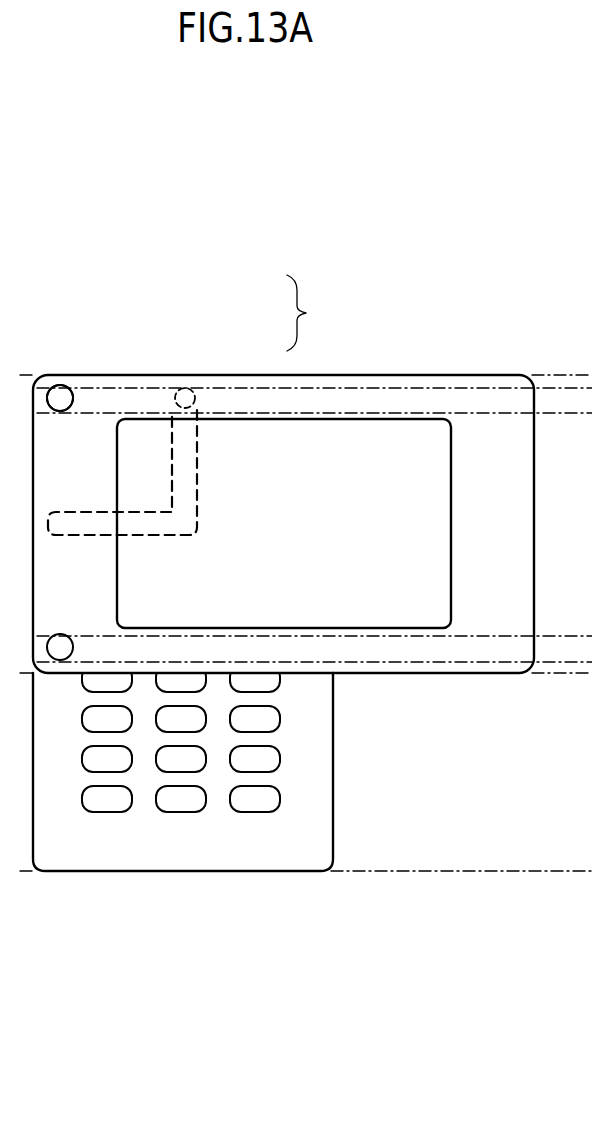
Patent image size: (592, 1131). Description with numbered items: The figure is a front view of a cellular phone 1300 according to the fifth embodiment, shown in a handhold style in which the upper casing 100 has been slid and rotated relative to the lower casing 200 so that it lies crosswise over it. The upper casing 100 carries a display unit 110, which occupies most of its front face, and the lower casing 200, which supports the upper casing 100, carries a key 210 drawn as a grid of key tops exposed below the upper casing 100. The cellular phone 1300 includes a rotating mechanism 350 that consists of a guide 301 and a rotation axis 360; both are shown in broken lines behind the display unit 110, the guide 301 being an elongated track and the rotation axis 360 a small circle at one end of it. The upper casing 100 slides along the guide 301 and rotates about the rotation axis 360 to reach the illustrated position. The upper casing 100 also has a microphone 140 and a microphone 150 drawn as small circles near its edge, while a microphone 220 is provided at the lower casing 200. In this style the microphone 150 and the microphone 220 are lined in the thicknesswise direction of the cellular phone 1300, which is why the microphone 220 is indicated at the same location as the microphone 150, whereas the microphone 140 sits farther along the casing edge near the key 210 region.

The cellular phone 1300 is at (281, 227).
The upper casing 100 is at (472, 450).
The display unit 110 is at (407, 490).
The microphone 150 is at (73, 399).
The microphone 220 is at (58, 396).
The rotating mechanism 350 is at (319, 313).
The rotation axis 360 is at (194, 392).
The guide 301 is at (199, 436).
The microphone 140 is at (60, 656).
The lower casing 200 is at (180, 829).
The key 210 is at (308, 678).